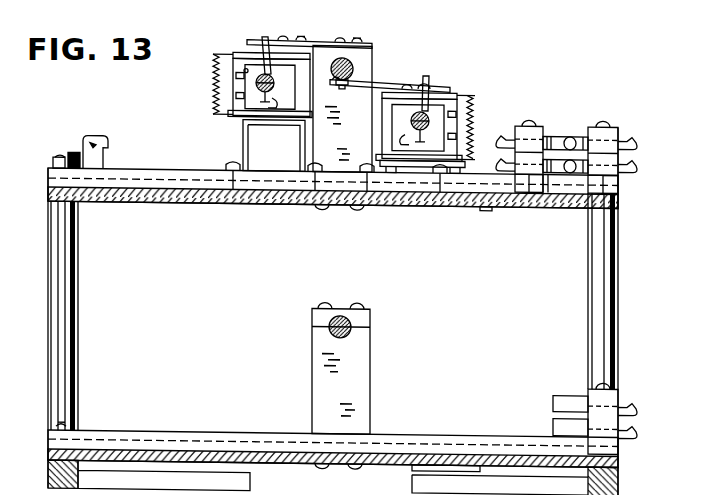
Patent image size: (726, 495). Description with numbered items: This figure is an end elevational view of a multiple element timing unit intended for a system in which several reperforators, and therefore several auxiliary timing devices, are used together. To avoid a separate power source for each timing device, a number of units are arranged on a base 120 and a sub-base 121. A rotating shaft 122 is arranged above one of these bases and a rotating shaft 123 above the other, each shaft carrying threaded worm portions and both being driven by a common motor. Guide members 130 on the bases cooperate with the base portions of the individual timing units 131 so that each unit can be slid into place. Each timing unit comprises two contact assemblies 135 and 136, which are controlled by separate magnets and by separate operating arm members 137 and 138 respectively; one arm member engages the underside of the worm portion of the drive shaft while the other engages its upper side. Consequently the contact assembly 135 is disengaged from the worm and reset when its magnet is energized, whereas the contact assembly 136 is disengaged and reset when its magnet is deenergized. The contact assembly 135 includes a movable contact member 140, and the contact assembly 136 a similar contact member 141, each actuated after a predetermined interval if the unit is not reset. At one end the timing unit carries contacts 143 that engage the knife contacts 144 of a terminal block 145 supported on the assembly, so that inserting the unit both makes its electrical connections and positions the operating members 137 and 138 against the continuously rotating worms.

The base 120 is at (272, 461).
The sub-base 121 is at (200, 200).
The rotating shaft 122 is at (342, 310).
The rotating shaft 123 is at (354, 58).
The guide member 130 is at (187, 166).
The timing unit 131 is at (172, 177).
The contact assembly 135 is at (474, 65).
The contact assembly 136 is at (288, 154).
The operating arm member 137 is at (368, 78).
The operating arm member 138 is at (317, 37).
The movable contact member 140 is at (418, 188).
The contact member 141 is at (268, 31).
The contacts 143 is at (563, 98).
The knife contacts 144 is at (587, 120).
The terminal block 145 is at (619, 128).